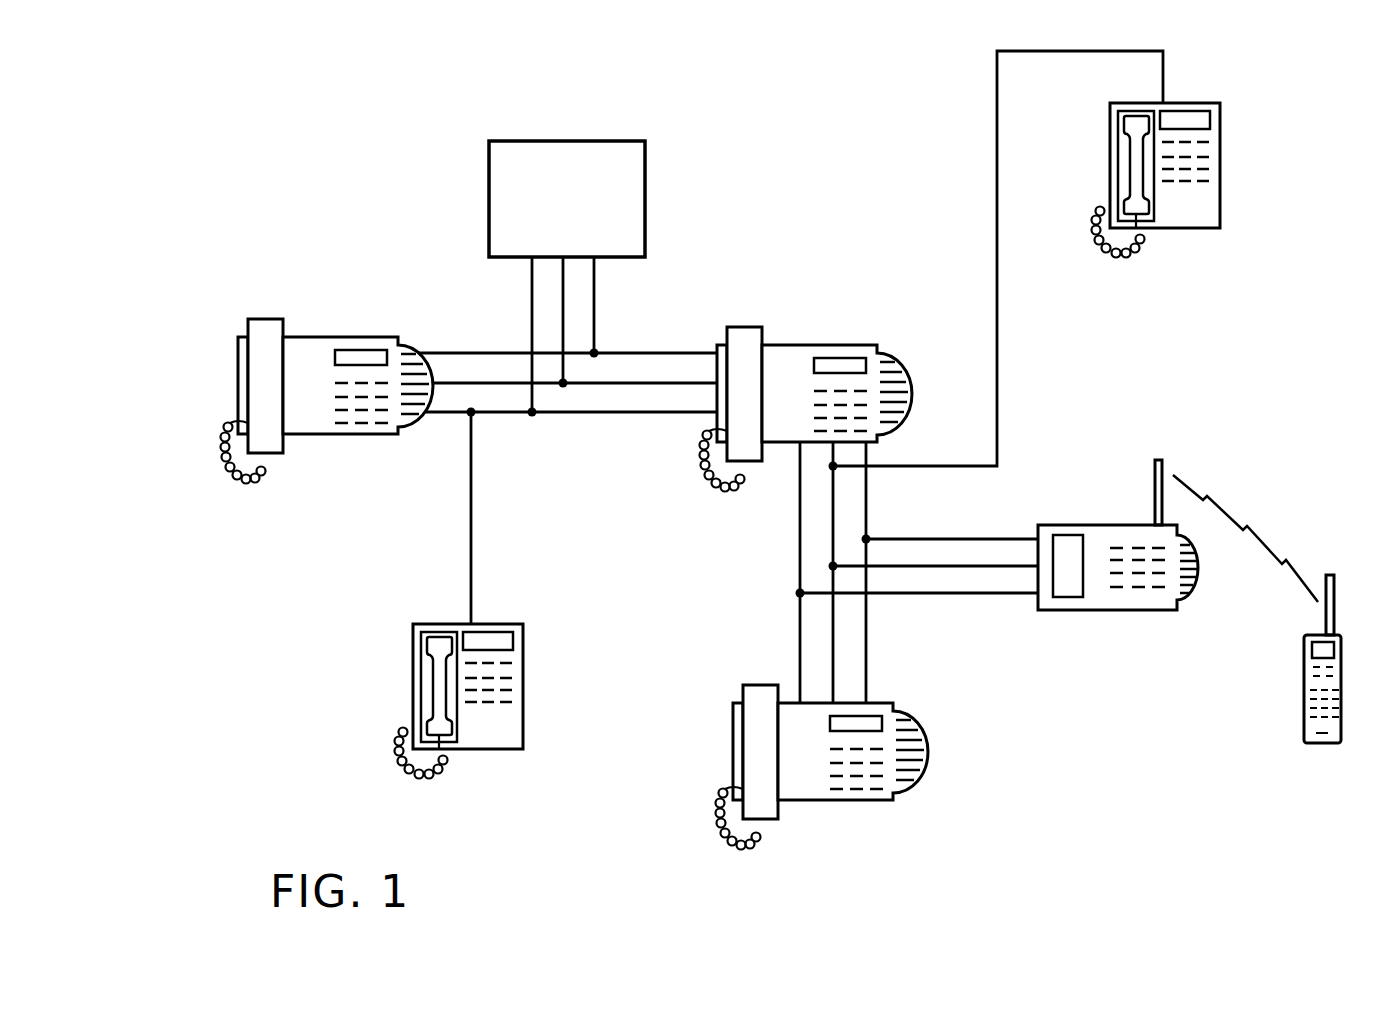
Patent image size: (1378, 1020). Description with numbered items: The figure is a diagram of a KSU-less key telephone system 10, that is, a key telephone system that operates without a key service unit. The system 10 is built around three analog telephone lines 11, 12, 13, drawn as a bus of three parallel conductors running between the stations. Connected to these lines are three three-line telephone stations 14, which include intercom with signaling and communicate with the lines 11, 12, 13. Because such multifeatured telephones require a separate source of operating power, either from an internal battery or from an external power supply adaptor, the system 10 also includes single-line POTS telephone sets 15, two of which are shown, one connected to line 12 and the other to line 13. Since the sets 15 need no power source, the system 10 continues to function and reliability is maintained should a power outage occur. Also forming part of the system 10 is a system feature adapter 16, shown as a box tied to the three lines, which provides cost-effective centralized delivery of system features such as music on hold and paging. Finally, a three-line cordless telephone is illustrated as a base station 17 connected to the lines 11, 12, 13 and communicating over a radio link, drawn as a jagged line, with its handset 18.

The KSU-less key telephone system 10 is at (1133, 862).
The telephone line 11 is at (634, 353).
The telephone line 12 is at (610, 385).
The telephone line 13 is at (677, 414).
The three-line telephone station 14 is at (800, 345).
The single-line POTS telephone set 15 is at (1220, 163).
The system feature adapter 16 is at (565, 141).
The base station 17 is at (1107, 610).
The handset 18 is at (1304, 703).